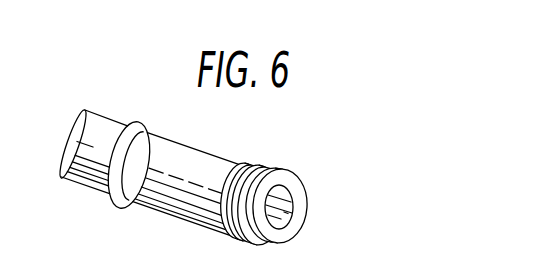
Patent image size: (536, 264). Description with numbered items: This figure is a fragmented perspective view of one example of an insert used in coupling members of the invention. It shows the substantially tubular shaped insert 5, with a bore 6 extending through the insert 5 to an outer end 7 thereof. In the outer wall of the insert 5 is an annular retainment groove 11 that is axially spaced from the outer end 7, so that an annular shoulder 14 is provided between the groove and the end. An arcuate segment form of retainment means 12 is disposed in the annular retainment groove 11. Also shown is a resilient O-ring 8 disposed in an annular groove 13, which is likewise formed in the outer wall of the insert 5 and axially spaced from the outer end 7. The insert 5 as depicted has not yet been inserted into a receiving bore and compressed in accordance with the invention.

The insert 5 is at (199, 152).
The bore 6 is at (276, 220).
The outer end 7 is at (3, 122).
The resilient O-ring 8 is at (144, 124).
The annular retainment groove 11 is at (257, 166).
The retainment means 12 is at (235, 164).
The annular groove 13 is at (172, 117).
The annular shoulder 14 is at (282, 171).